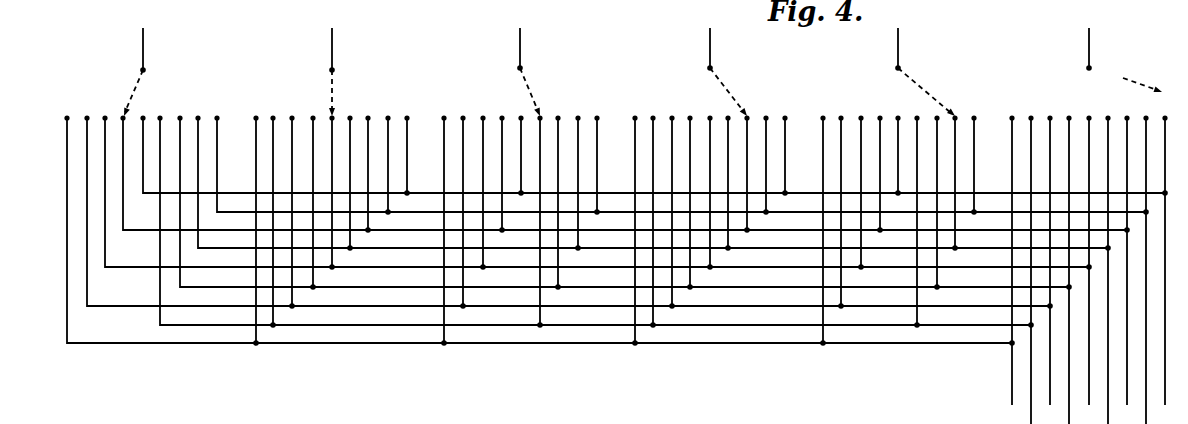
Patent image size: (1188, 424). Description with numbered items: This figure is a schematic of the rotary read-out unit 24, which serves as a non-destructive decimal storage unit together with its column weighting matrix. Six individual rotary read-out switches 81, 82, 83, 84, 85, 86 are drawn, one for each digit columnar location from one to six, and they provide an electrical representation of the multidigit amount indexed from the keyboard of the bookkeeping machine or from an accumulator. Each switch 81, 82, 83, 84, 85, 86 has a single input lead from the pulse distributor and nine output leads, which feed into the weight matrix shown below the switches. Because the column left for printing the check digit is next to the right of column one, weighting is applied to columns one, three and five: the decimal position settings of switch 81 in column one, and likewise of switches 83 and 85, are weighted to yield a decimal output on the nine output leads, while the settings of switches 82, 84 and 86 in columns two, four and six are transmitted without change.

The rotary read-out unit 24 is at (930, 350).
The rotary read-out switch 81 is at (176, 74).
The rotary read-out switch 82 is at (364, 74).
The rotary read-out switch 83 is at (550, 74).
The rotary read-out switch 84 is at (740, 74).
The rotary read-out switch 85 is at (930, 74).
The rotary read-out switch 86 is at (1120, 74).